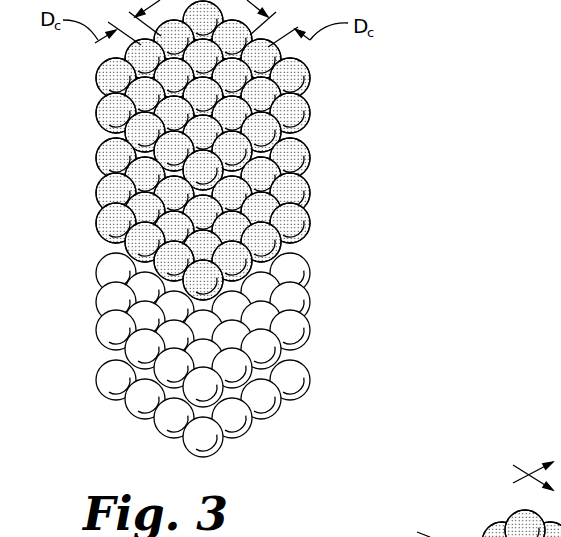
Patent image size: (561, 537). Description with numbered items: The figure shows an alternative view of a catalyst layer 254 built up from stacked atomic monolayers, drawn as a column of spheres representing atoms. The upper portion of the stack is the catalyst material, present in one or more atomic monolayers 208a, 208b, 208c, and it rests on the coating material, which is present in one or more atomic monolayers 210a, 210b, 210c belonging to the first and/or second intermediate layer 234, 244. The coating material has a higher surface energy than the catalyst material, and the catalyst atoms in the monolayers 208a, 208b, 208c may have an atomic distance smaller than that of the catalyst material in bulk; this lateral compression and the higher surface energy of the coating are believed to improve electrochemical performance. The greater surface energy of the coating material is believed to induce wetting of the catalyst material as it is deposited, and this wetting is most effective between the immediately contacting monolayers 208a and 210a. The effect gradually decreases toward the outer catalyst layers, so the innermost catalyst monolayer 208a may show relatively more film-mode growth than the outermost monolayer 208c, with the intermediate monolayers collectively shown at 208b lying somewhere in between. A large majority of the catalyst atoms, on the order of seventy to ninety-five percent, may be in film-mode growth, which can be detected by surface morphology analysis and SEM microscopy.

The innermost catalyst material monolayer 208a is at (250, 251).
The intermediate catalyst material monolayers 208b is at (325, 93).
The outermost catalyst material monolayer 208c is at (307, 73).
The coating material atomic monolayer 210a is at (305, 265).
The coating material atomic monolayers 210b is at (325, 280).
The coating material atomic monolayer 210c is at (250, 408).
The catalyst layer 254 is at (289, 150).
The first intermediate layer 234 is at (309, 352).
The second intermediate layer 244 is at (309, 355).